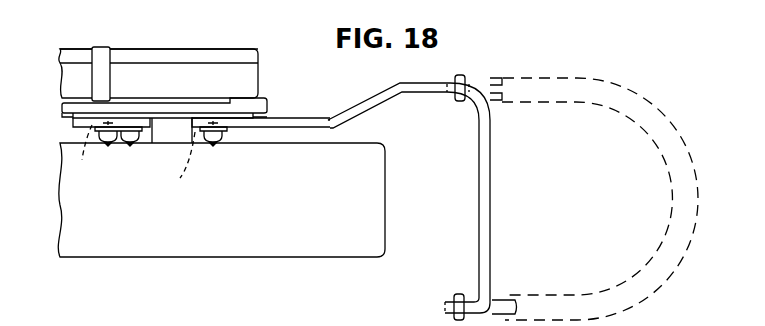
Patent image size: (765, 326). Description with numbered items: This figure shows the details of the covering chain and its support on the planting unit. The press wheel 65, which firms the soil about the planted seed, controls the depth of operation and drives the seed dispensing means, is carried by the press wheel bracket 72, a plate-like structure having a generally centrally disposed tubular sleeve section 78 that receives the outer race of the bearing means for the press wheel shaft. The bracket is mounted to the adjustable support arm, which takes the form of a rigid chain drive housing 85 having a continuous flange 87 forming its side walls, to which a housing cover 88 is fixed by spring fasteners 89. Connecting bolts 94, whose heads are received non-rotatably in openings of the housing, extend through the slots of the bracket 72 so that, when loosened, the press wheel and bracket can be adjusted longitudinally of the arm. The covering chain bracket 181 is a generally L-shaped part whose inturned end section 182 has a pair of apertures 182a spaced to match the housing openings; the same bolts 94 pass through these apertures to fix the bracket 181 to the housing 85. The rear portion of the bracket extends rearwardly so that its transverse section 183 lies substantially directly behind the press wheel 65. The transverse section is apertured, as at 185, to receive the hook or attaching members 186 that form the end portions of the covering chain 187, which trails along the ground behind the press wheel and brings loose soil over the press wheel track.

The press wheel 65 is at (268, 259).
The press wheel bracket 72 is at (262, 101).
The tubular sleeve section 78 is at (183, 132).
The chain drive housing 85 is at (263, 69).
The continuous flange 87 is at (130, 76).
The housing cover 88 is at (184, 56).
The spring fasteners 89 is at (100, 52).
The connecting bolts 94 is at (128, 143).
The covering chain bracket 181 is at (321, 115).
The inturned end section 182 is at (82, 121).
The apertures 182a is at (117, 157).
The transverse section 183 is at (489, 187).
The apertures 185 is at (456, 96).
The hook or attaching members 186 is at (462, 84).
The covering chain 187 is at (580, 80).